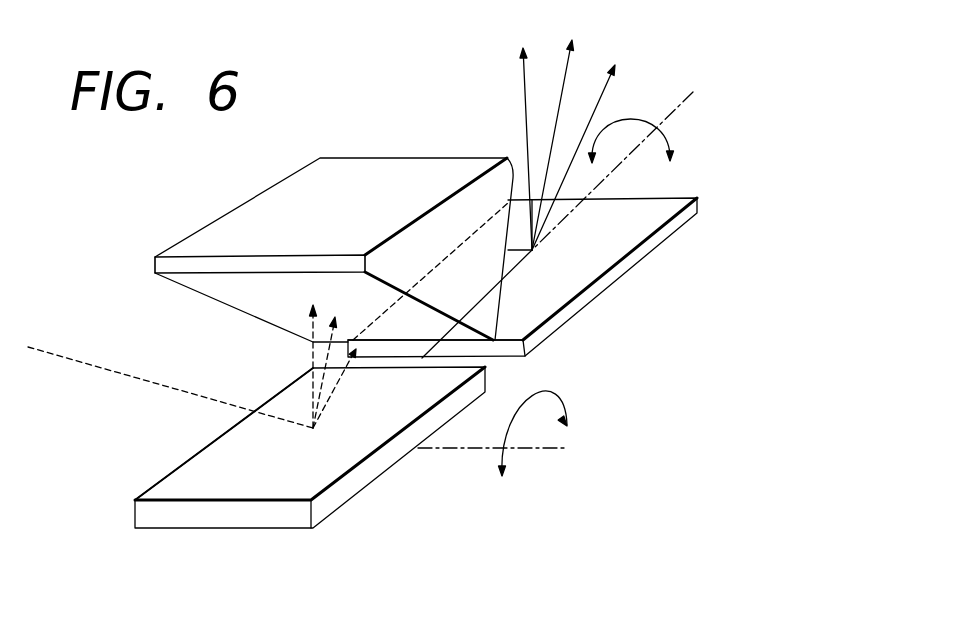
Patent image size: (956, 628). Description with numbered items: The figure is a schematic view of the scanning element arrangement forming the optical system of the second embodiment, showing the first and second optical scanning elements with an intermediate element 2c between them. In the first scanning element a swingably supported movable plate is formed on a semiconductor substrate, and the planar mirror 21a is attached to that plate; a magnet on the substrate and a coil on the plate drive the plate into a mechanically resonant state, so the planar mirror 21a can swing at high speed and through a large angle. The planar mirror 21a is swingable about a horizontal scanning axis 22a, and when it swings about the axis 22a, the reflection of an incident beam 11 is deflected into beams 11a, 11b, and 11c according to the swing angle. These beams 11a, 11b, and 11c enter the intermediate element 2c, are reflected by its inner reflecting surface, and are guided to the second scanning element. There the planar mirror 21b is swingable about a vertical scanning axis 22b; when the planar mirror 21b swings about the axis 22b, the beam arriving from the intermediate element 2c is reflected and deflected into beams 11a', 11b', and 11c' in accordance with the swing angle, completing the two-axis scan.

The intermediate element 2c is at (405, 167).
The beam 11 is at (118, 373).
The beam 11a is at (346, 372).
The beam 11b is at (263, 366).
The beam 11c is at (358, 388).
The beam 11a' is at (588, 142).
The beam 11b' is at (492, 149).
The beam 11c' is at (610, 154).
The planar mirror 21a is at (355, 448).
The planar mirror 21b is at (587, 272).
The horizontal scanning axis 22a is at (543, 450).
The vertical scanning axis 22b is at (683, 103).